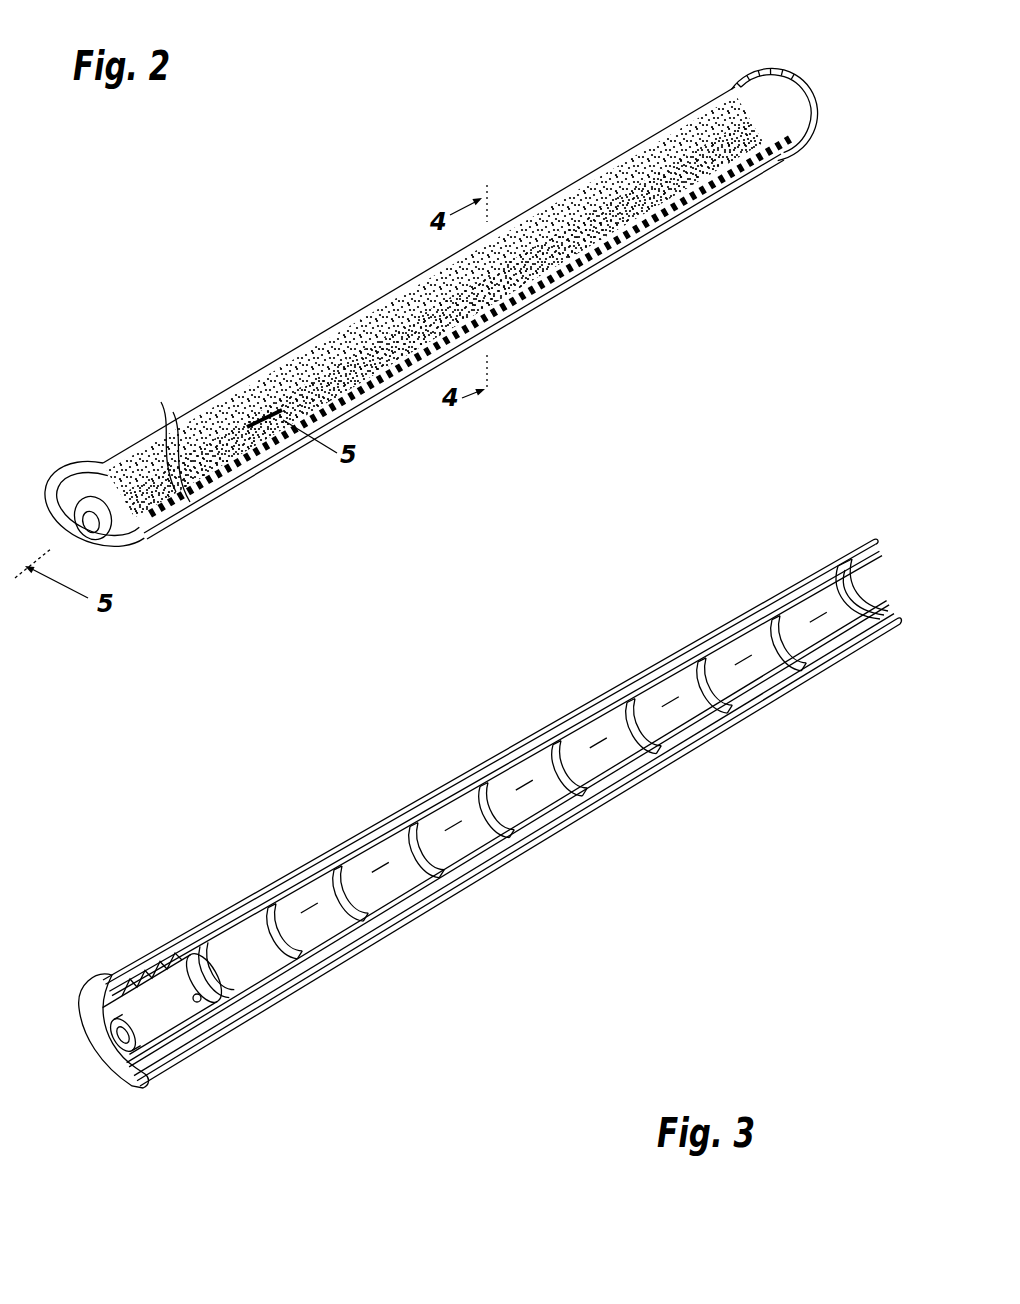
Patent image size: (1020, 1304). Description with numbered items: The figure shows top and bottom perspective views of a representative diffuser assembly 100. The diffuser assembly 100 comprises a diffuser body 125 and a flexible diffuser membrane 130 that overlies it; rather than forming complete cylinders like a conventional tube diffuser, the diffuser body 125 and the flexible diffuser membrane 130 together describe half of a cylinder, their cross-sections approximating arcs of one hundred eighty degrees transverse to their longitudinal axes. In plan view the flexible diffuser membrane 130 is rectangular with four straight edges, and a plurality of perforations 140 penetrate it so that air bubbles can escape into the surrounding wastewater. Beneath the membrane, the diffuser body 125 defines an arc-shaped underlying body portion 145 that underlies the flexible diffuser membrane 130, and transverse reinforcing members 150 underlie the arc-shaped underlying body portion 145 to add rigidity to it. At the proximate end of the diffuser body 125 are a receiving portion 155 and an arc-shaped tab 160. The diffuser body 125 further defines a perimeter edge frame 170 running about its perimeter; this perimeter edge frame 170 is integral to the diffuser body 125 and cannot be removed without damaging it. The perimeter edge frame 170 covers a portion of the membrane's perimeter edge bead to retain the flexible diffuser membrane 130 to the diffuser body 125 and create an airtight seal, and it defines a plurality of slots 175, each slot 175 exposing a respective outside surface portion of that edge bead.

In FIG. 2, the diffuser assembly 100 is at (157, 266).
In FIG. 3, the diffuser assembly 100 is at (533, 700).
In FIG. 2, the diffuser body 125 is at (808, 86).
In FIG. 3, the diffuser body 125 is at (882, 582).
In FIG. 2, the flexible diffuser membrane 130 is at (614, 150).
In FIG. 2, the perforations 140 is at (312, 373).
In FIG. 3, the arc-shaped underlying body portion 145 is at (406, 893).
In FIG. 3, the transverse reinforcing members 150 is at (782, 646).
In FIG. 2, the receiving portion 155 is at (63, 530).
In FIG. 3, the receiving portion 155 is at (183, 1047).
In FIG. 2, the arc-shaped tab 160 is at (84, 463).
In FIG. 3, the arc-shaped tab 160 is at (110, 1056).
In FIG. 2, the perimeter edge frame 170 is at (194, 505).
In FIG. 3, the perimeter edge frame 170 is at (393, 818).
In FIG. 2, the slots 175 is at (166, 396).